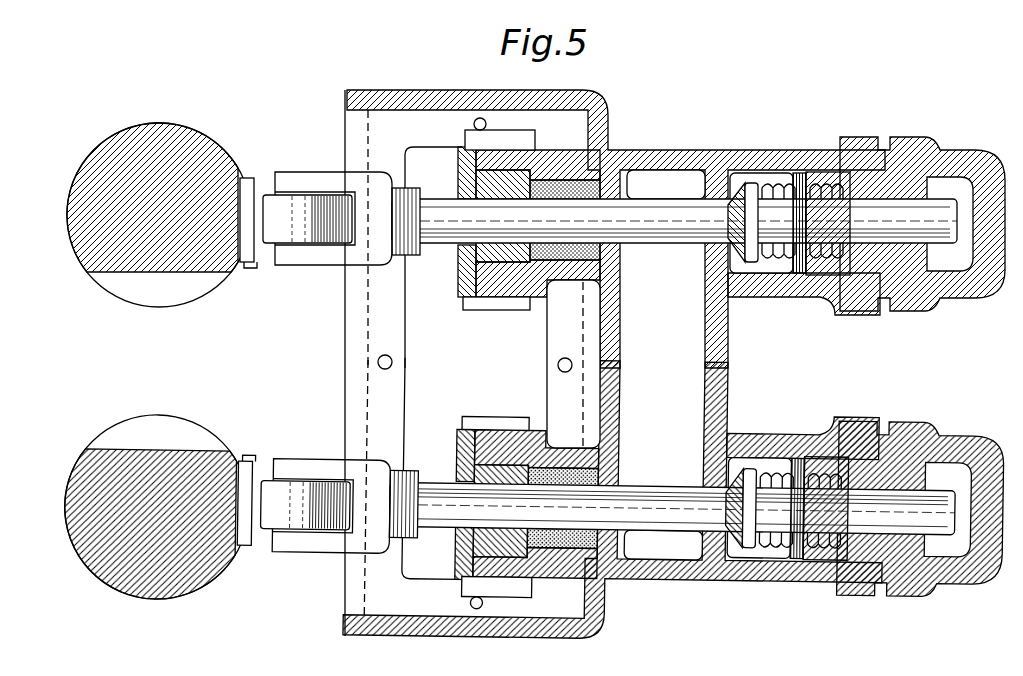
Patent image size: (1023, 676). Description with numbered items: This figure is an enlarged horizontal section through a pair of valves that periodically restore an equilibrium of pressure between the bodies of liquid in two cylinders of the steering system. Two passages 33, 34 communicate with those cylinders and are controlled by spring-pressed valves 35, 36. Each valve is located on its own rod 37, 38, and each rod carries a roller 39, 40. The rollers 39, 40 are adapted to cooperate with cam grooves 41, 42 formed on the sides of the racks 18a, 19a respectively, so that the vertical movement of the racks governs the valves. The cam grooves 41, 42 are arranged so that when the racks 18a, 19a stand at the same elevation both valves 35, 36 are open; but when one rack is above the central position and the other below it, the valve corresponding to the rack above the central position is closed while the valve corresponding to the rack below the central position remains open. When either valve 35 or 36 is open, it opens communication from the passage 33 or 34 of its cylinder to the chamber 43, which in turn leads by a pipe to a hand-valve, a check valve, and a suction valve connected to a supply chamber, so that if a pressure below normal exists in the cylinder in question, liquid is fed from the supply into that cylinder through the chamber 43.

The rack 18a is at (172, 578).
The rack 19a is at (192, 143).
The passage 33 is at (773, 562).
The passage 34 is at (781, 176).
The spring-pressed valve 35 is at (750, 562).
The spring-pressed valve 36 is at (740, 185).
The rod 37 is at (652, 522).
The rod 38 is at (652, 205).
The roller 39 is at (262, 483).
The roller 40 is at (267, 195).
The cam groove 41 is at (252, 548).
The cam groove 42 is at (250, 257).
The chamber 43 is at (664, 365).